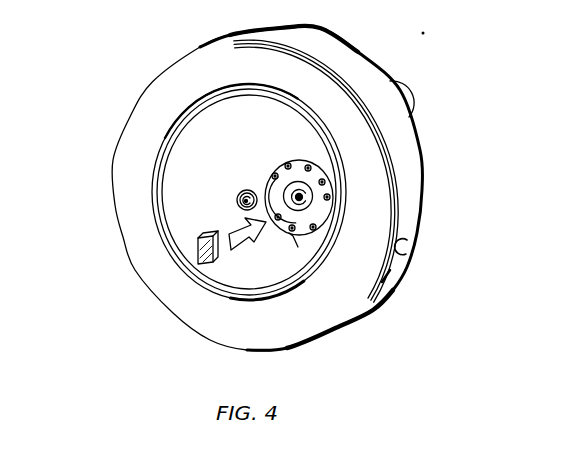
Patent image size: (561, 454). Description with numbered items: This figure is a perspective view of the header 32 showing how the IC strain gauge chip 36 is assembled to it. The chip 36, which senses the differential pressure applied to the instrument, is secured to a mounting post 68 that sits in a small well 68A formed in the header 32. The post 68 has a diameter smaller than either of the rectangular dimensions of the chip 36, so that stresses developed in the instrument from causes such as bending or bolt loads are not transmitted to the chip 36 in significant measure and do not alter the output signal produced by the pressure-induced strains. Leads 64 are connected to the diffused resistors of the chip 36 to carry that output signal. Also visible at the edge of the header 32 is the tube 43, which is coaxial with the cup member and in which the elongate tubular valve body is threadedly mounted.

The header 32 is at (370, 303).
The tube 43 is at (412, 90).
The mounting post 68 is at (265, 183).
The well 68A is at (268, 182).
The leads 64 is at (290, 164).
The IC strain gauge chip 36 is at (197, 248).